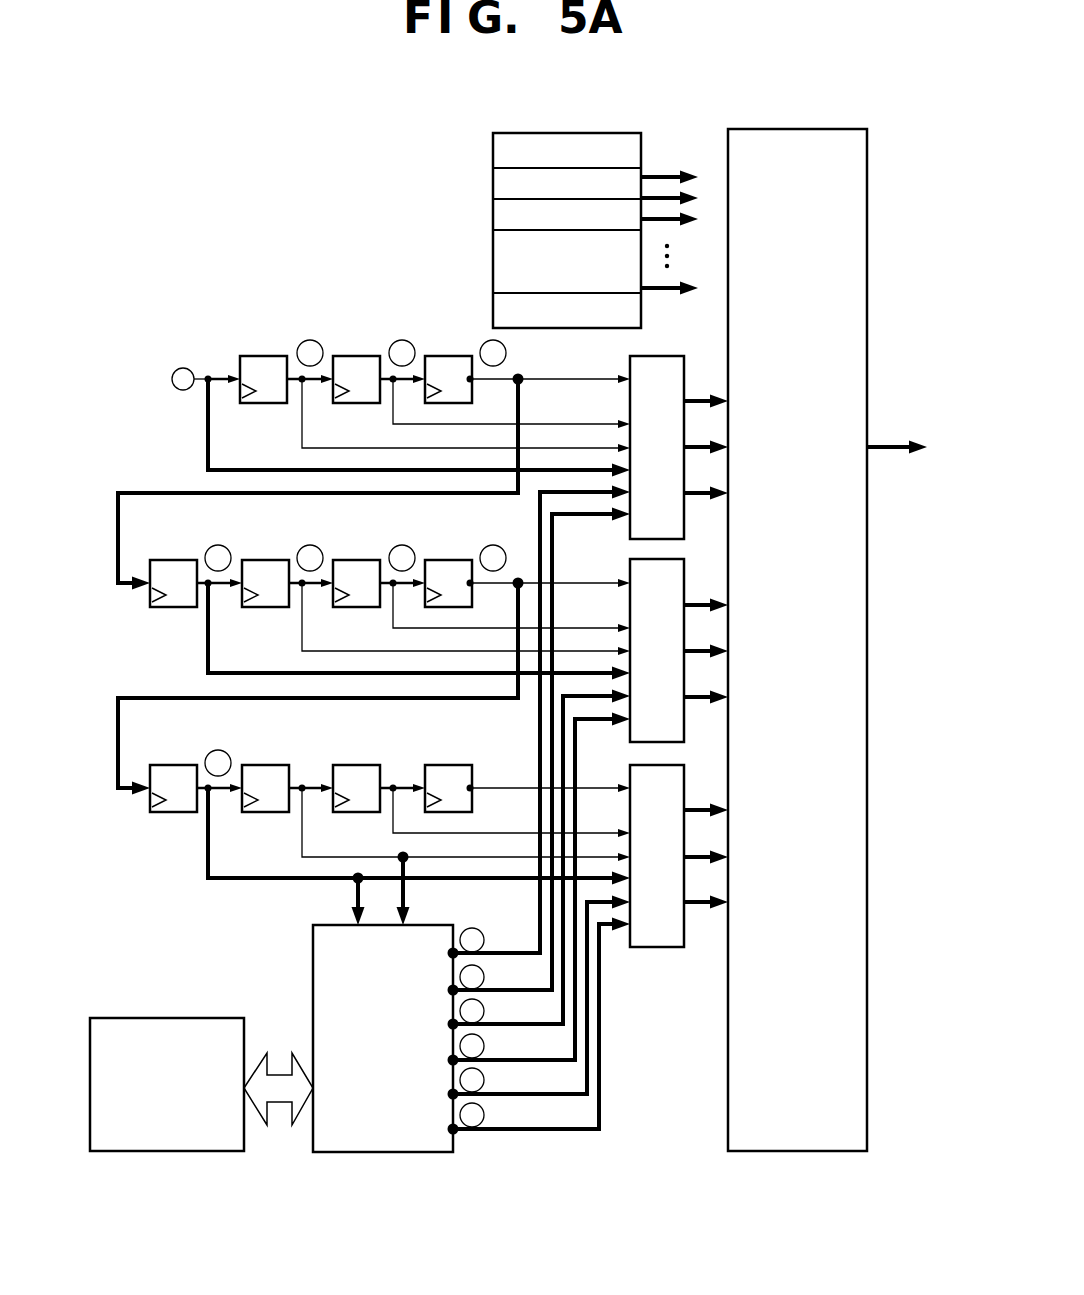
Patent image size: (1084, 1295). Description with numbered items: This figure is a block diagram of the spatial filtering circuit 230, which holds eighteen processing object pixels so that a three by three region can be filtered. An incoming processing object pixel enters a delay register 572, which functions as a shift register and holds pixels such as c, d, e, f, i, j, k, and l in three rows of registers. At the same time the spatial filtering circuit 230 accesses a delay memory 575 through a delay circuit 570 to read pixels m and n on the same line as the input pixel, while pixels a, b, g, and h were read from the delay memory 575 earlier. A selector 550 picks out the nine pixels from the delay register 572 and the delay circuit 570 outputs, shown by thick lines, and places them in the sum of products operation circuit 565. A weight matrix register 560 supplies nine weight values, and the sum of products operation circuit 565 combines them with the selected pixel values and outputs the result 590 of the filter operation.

The spatial filtering circuit 230 is at (850, 104).
The weight matrix register 560 is at (493, 199).
The delay register 572 is at (166, 891).
The selector 550 is at (652, 948).
The delay circuit 570 is at (385, 1152).
The delay memory 575 is at (213, 1152).
The sum of products operation circuit 565 is at (798, 1151).
The result of the filter operation 590 is at (883, 450).